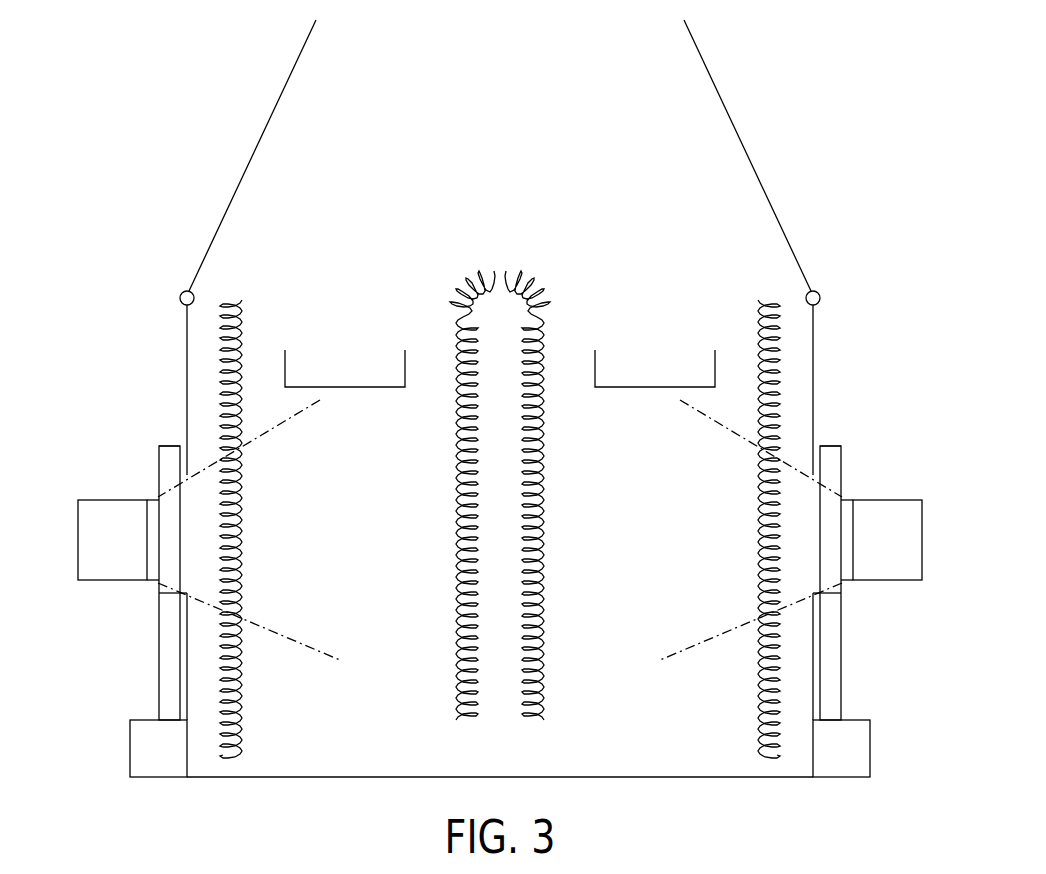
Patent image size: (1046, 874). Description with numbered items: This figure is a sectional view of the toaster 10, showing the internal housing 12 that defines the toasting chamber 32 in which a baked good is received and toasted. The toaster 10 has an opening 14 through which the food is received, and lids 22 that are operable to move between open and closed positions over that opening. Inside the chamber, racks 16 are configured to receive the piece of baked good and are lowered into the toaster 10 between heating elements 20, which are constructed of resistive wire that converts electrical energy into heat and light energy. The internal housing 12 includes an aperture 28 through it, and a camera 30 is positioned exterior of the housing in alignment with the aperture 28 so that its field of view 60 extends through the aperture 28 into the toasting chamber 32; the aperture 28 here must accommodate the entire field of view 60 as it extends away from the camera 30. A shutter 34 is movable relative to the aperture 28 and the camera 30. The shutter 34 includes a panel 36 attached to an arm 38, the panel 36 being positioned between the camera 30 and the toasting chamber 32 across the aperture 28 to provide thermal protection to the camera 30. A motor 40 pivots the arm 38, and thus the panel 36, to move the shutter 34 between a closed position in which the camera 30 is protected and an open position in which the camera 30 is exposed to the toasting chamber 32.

The toaster 10 is at (841, 117).
The internal housing 12 is at (816, 345).
The opening 14 is at (500, 477).
The rack 16 is at (285, 367).
The heating element 20 is at (526, 291).
The lid 22 is at (253, 157).
The aperture 28 is at (185, 473).
The camera 30 is at (83, 570).
The toasting chamber 32 is at (327, 600).
The shutter 34 is at (137, 440).
The panel 36 is at (162, 587).
The arm 38 is at (165, 652).
The motor 40 is at (145, 760).
The field of view 60 is at (272, 563).